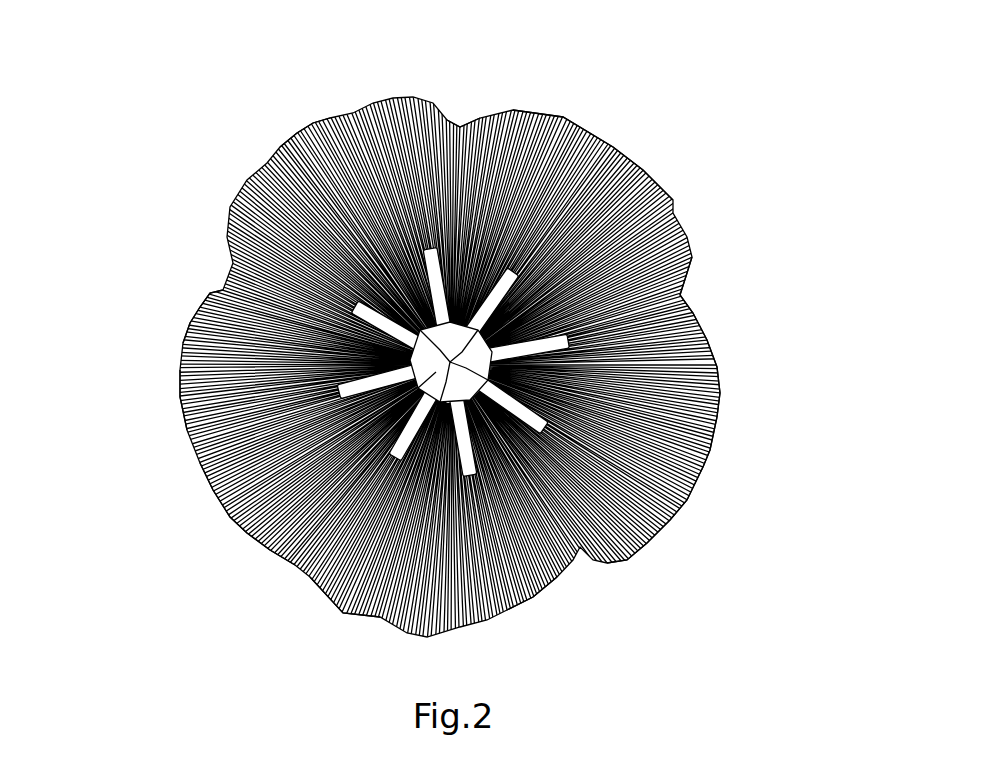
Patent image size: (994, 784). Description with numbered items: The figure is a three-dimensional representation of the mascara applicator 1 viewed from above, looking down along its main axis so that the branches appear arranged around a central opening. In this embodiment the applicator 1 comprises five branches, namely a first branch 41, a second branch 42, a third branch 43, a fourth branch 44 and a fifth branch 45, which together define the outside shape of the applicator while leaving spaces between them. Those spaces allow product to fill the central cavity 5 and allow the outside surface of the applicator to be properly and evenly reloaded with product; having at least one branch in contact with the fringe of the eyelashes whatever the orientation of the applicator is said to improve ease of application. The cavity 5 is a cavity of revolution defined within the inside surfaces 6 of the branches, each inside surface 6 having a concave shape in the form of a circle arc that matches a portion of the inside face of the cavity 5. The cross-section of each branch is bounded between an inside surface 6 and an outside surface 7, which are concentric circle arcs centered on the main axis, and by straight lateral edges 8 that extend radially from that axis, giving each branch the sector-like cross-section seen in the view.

The applicator 1 is at (182, 130).
The cavity 5 is at (710, 450).
The inside surface 6 is at (310, 127).
The outside surface 7 is at (480, 127).
The straight lateral edges 8 is at (672, 296).
The first branch 41 is at (635, 192).
The second branch 42 is at (717, 353).
The third branch 43 is at (640, 560).
The fourth branch 44 is at (247, 533).
The fifth branch 45 is at (220, 290).